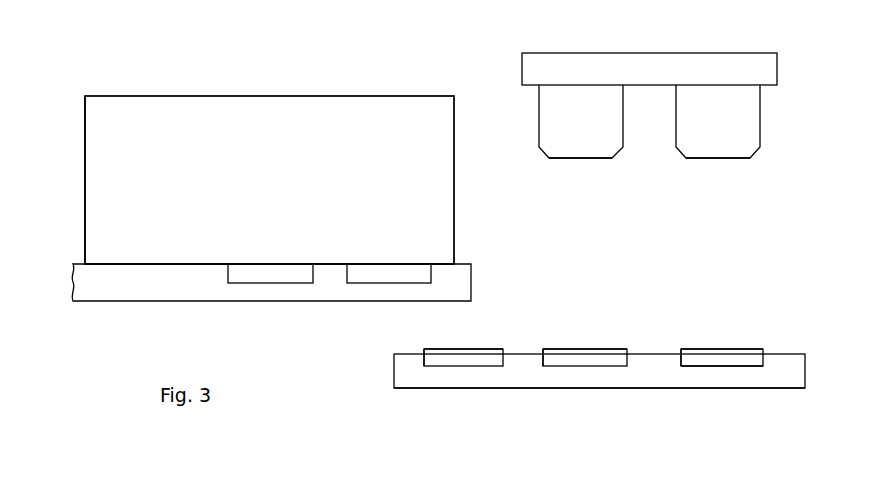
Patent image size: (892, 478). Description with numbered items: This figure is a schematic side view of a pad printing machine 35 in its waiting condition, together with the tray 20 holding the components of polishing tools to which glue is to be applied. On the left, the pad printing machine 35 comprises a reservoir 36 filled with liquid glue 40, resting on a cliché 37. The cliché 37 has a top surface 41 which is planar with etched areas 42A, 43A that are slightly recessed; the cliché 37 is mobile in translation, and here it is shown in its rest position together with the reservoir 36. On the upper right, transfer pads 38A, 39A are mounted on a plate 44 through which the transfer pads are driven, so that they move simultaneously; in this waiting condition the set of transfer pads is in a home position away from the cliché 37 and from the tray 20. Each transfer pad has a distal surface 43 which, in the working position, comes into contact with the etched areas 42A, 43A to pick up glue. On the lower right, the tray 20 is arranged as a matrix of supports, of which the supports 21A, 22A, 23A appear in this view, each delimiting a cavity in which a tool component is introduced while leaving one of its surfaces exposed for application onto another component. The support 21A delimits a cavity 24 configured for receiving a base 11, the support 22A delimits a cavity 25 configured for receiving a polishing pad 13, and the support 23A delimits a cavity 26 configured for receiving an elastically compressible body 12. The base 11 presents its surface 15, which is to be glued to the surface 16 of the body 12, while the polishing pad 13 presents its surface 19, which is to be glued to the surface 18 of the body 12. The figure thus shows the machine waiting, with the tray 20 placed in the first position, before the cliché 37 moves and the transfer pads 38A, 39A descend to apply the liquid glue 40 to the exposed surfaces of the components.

The pad printing machine 35 is at (75, 68).
The reservoir 36 is at (286, 146).
The cliché 37 is at (145, 278).
The liquid glue 40 is at (97, 190).
The top surface 41 is at (190, 262).
The etched area 42A is at (268, 275).
The etched area 43A is at (389, 274).
The plate 44 is at (649, 66).
The transfer pad 38A is at (600, 128).
The transfer pad 39A is at (737, 128).
The distal surface 43 is at (580, 160).
The tray 20 is at (809, 352).
The base 11 is at (495, 360).
The polishing pad 13 is at (569, 360).
The elastically compressible body 12 is at (710, 360).
The surface 15 is at (467, 349).
The surface 19 is at (603, 349).
The surface 18 is at (738, 349).
The surface 16 is at (760, 370).
The cavity 24 is at (433, 360).
The cavity 25 is at (557, 360).
The cavity 26 is at (697, 360).
The support 21A is at (469, 380).
The support 22A is at (591, 380).
The support 23A is at (733, 378).